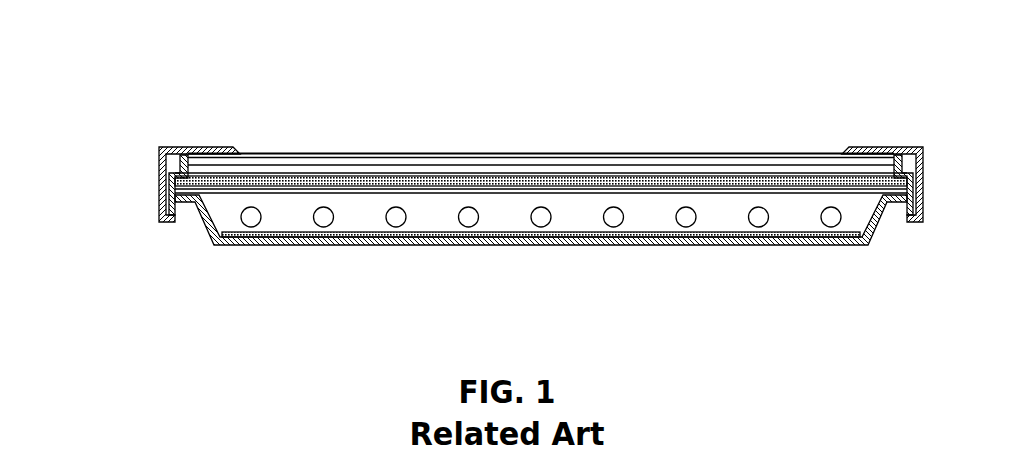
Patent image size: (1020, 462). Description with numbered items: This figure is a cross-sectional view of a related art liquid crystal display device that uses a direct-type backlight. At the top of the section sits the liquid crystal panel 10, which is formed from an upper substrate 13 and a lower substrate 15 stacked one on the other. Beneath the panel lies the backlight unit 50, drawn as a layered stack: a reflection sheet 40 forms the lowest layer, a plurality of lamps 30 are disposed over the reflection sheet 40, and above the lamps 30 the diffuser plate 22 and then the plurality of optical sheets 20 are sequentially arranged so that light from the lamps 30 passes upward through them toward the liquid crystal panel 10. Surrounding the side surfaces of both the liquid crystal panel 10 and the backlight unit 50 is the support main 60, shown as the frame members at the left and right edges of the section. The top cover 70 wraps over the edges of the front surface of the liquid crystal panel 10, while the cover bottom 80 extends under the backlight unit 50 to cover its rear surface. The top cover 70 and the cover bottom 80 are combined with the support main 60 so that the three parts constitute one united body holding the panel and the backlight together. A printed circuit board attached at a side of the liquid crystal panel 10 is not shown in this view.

The liquid crystal panel 10 is at (541, 91).
The upper substrate 13 is at (490, 163).
The lower substrate 15 is at (443, 168).
The optical sheets 20 is at (368, 192).
The diffuser plate 22 is at (427, 193).
The lamps 30 is at (466, 227).
The reflection sheet 40 is at (520, 246).
The backlight unit 50 is at (541, 266).
The support main 60 is at (160, 195).
The top cover 70 is at (197, 147).
The cover bottom 80 is at (275, 245).